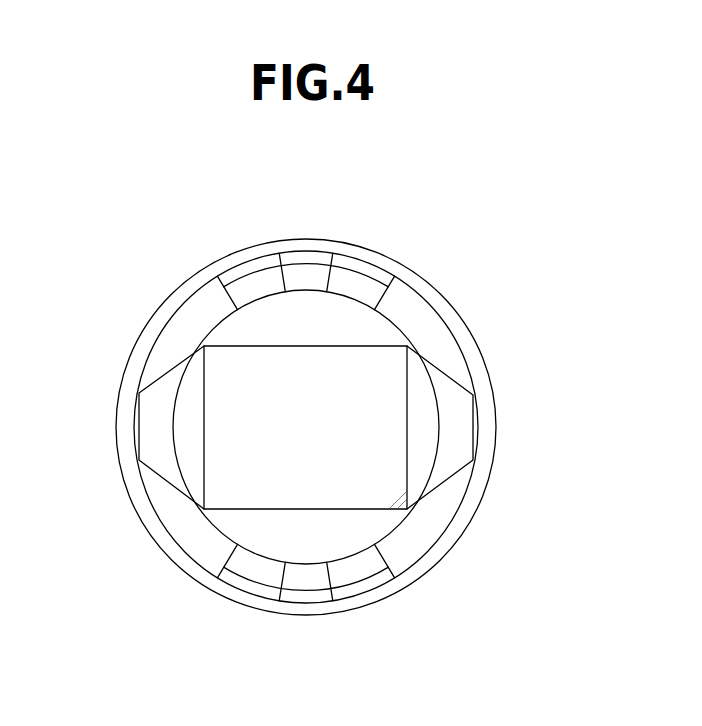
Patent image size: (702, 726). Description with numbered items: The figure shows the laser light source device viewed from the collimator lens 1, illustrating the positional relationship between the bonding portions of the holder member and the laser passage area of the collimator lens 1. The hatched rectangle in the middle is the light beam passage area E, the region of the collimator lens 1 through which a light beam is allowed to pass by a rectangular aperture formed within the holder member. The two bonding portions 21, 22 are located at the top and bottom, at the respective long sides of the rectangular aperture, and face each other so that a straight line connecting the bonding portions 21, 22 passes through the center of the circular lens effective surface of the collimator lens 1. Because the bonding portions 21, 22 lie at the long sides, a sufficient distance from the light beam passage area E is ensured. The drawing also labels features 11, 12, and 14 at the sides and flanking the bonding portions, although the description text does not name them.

The collimator lens 1 is at (378, 330).
The light beam passage area E is at (243, 365).
The first holding portion 11 is at (147, 428).
The second holding portion 12 is at (457, 427).
The side portion 14 is at (259, 297).
The bonding portion 21 is at (308, 272).
The bonding portion 22 is at (308, 580).